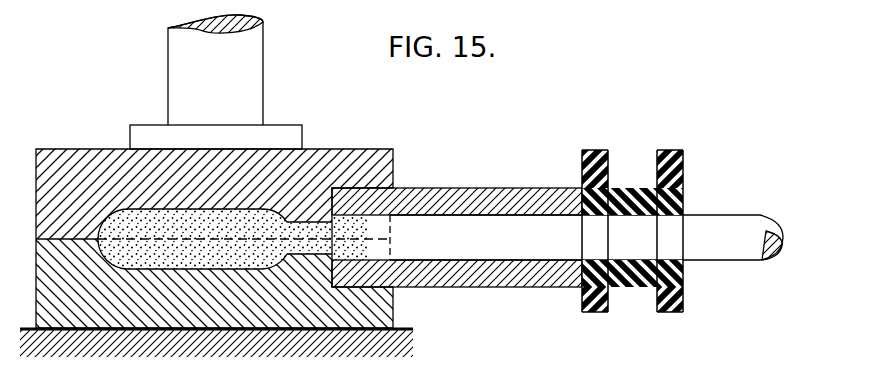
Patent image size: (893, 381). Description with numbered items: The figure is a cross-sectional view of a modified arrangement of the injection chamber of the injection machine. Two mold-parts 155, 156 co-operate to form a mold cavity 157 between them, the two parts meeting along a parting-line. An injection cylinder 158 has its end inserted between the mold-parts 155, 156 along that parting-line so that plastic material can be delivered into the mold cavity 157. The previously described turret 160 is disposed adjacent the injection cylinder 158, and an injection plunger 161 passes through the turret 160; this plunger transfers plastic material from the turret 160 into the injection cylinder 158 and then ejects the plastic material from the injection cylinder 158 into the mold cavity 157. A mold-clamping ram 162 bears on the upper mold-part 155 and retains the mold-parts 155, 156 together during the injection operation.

The mold-part 155 is at (72, 158).
The mold-part 156 is at (84, 320).
The mold cavity 157 is at (120, 208).
The injection cylinder 158 is at (487, 190).
The turret 160 is at (582, 161).
The injection plunger 161 is at (541, 240).
The mold-clamping ram 162 is at (253, 83).